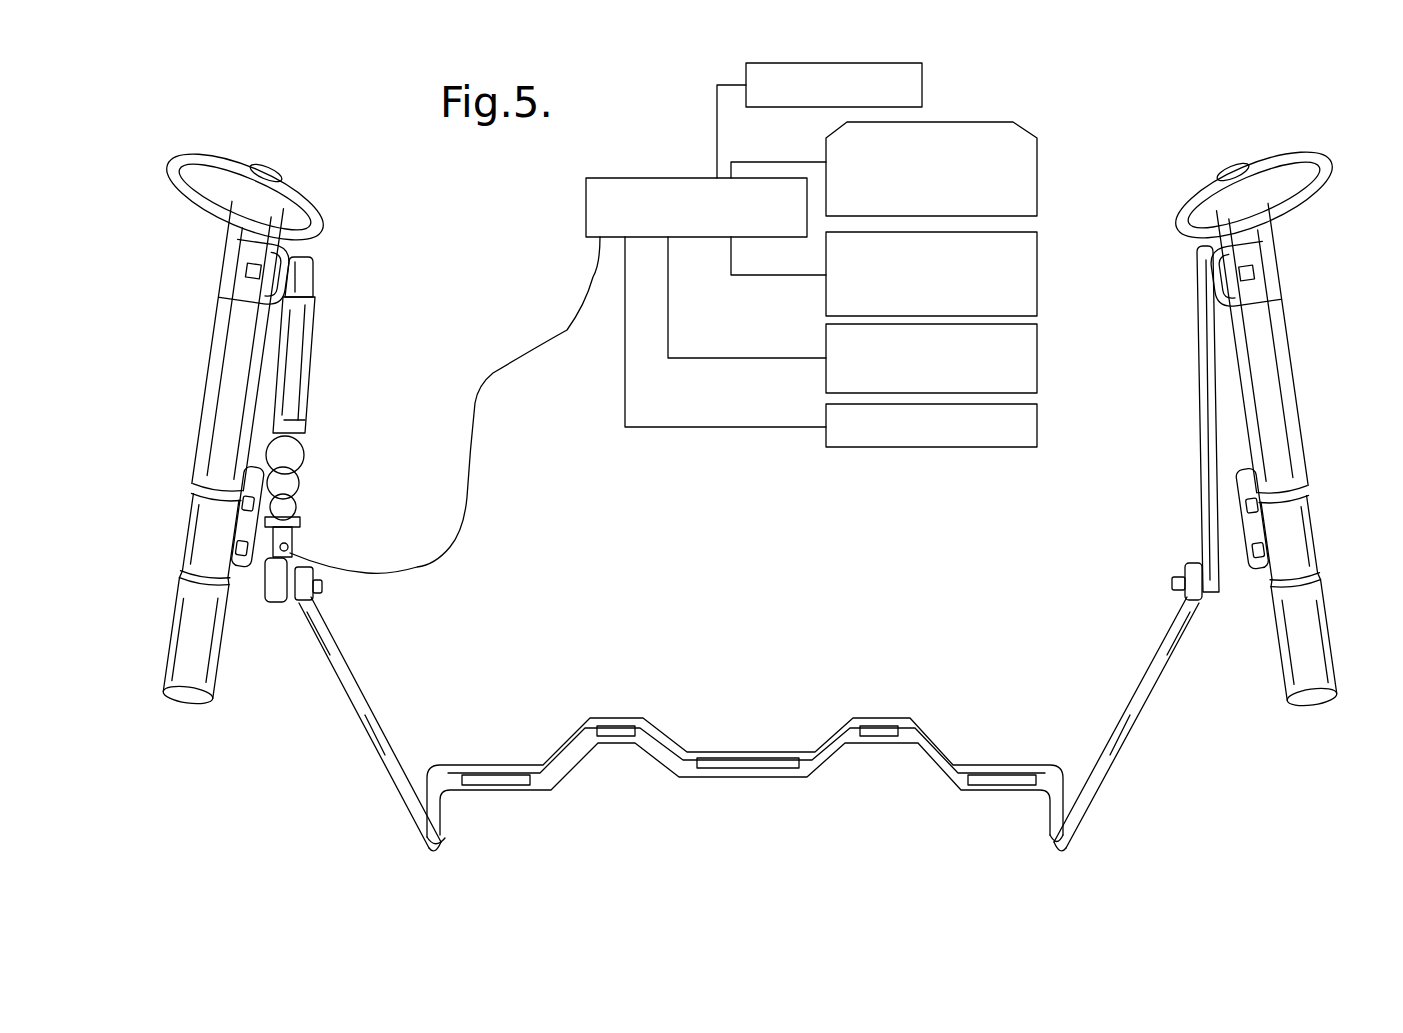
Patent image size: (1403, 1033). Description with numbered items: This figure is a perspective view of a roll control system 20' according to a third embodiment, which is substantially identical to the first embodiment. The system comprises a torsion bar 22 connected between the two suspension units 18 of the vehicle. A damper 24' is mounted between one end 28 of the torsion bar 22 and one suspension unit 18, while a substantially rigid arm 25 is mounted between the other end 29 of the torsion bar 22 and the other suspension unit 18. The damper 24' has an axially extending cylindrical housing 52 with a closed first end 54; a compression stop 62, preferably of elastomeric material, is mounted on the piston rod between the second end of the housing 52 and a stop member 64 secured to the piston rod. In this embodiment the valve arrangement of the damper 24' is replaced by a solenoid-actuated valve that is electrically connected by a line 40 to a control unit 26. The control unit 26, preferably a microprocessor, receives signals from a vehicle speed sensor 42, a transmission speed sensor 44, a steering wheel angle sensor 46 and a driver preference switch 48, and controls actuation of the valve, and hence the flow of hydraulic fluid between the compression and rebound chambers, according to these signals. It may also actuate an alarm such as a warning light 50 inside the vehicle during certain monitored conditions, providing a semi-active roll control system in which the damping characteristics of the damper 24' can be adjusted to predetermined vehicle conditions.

The suspension unit 18 is at (197, 392).
The roll control system 20' is at (1144, 480).
The torsion bar 22 is at (757, 754).
The damper 24' is at (338, 407).
The rigid arm 25 is at (1163, 440).
The control unit 26 is at (703, 237).
The end of the torsion bar 28 is at (305, 612).
The other end of the torsion bar 29 is at (1190, 618).
The line 40 is at (490, 382).
The vehicle speed sensor 42 is at (826, 371).
The transmission speed sensor 44 is at (930, 447).
The steering wheel angle sensor 46 is at (826, 294).
The driver preference switch 48 is at (826, 136).
The warning light 50 is at (922, 80).
The cylindrical housing 52 is at (308, 372).
The closed first end 54 is at (314, 268).
The compression stop 62 is at (300, 490).
The stop member 64 is at (300, 522).